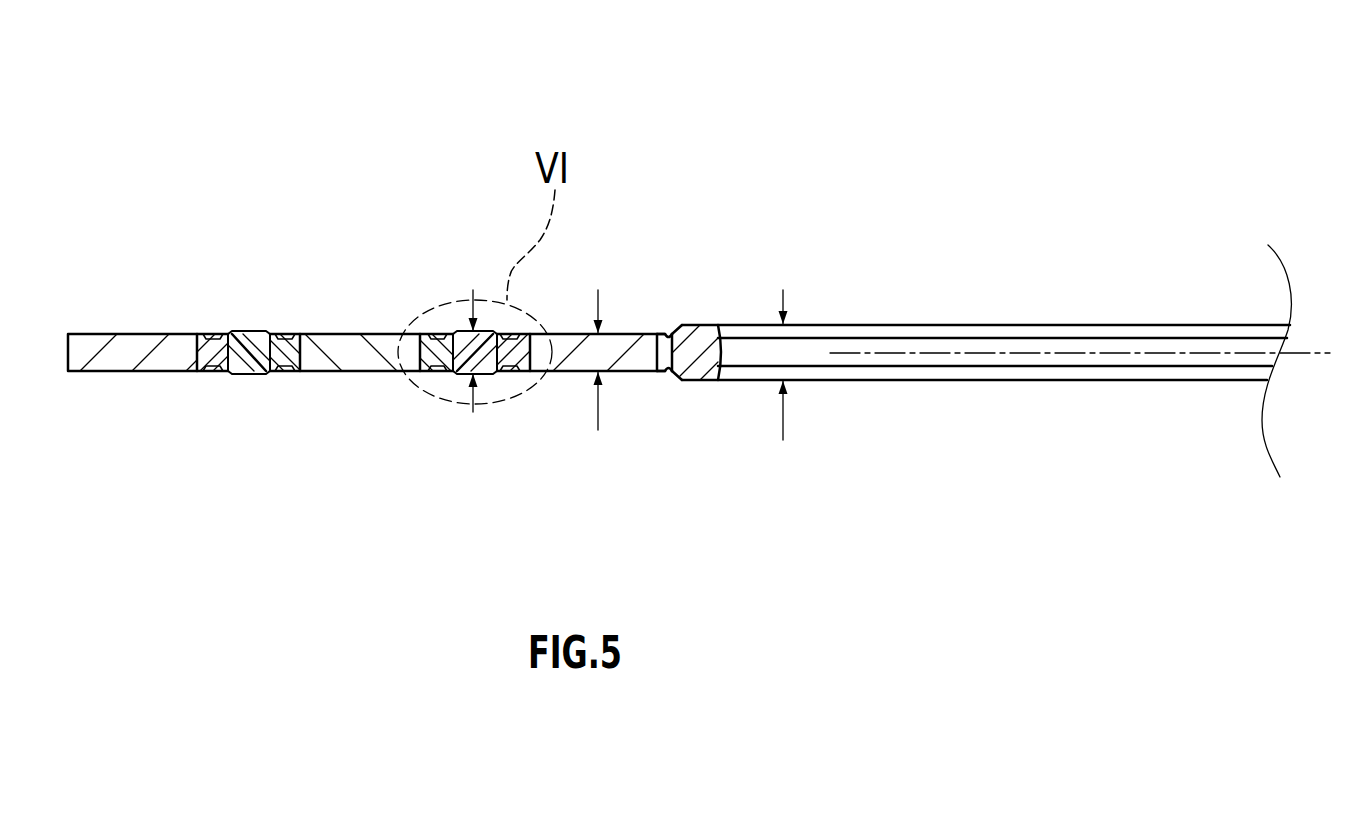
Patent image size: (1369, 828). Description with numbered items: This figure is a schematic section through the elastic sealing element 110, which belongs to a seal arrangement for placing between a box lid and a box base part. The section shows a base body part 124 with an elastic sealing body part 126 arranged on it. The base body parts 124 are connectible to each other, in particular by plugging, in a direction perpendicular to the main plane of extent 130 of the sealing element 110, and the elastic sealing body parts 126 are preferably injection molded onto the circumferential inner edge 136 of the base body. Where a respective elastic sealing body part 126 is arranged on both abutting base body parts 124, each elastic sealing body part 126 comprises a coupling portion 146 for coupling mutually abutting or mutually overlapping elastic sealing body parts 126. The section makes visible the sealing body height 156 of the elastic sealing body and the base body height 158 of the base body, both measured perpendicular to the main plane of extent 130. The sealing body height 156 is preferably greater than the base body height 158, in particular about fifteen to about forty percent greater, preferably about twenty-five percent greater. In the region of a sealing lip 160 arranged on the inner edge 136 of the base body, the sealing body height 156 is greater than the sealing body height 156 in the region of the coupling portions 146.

The sealing element 110 is at (969, 178).
The base body part 124 is at (125, 360).
The elastic sealing body part 126 is at (697, 372).
The main plane of extent 130 is at (1315, 353).
The circumferential inner edge 136 is at (668, 372).
The coupling portion 146 is at (248, 332).
The sealing body height 156 is at (473, 331).
The base body height 158 is at (600, 352).
The sealing lip 160 is at (690, 326).